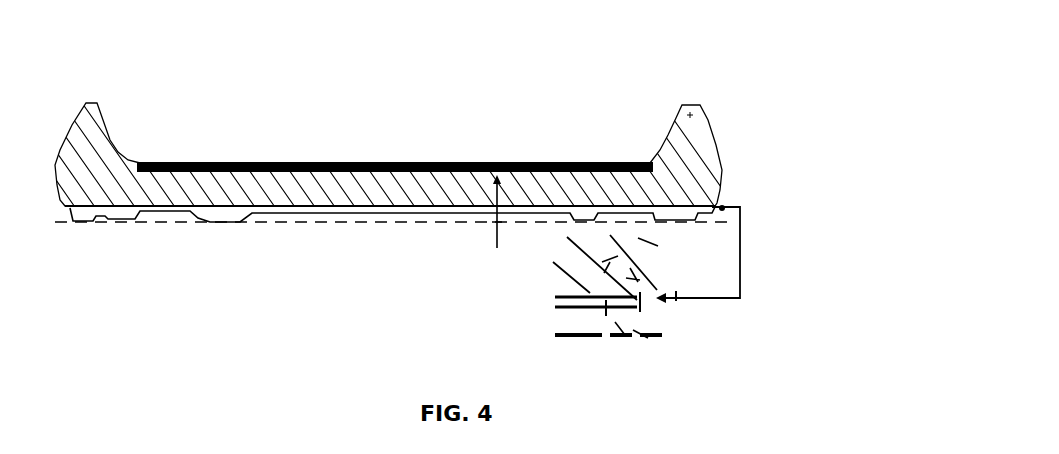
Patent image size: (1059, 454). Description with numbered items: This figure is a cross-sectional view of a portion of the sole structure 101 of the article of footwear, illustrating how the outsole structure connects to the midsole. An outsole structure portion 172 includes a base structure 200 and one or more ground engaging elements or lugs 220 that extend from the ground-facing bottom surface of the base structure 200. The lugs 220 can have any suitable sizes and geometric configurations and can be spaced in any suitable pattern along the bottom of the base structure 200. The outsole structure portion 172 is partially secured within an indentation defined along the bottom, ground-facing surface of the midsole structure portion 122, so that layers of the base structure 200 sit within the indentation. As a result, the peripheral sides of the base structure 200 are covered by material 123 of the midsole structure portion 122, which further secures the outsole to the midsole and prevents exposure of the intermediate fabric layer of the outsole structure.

The sole structure 101 is at (760, 63).
The midsole structure portion 122 is at (707, 160).
The material of the midsole structure portion 123 is at (642, 297).
The outsole structure portion 172 is at (297, 210).
The base structure 200 is at (560, 298).
The lugs 220 is at (583, 323).